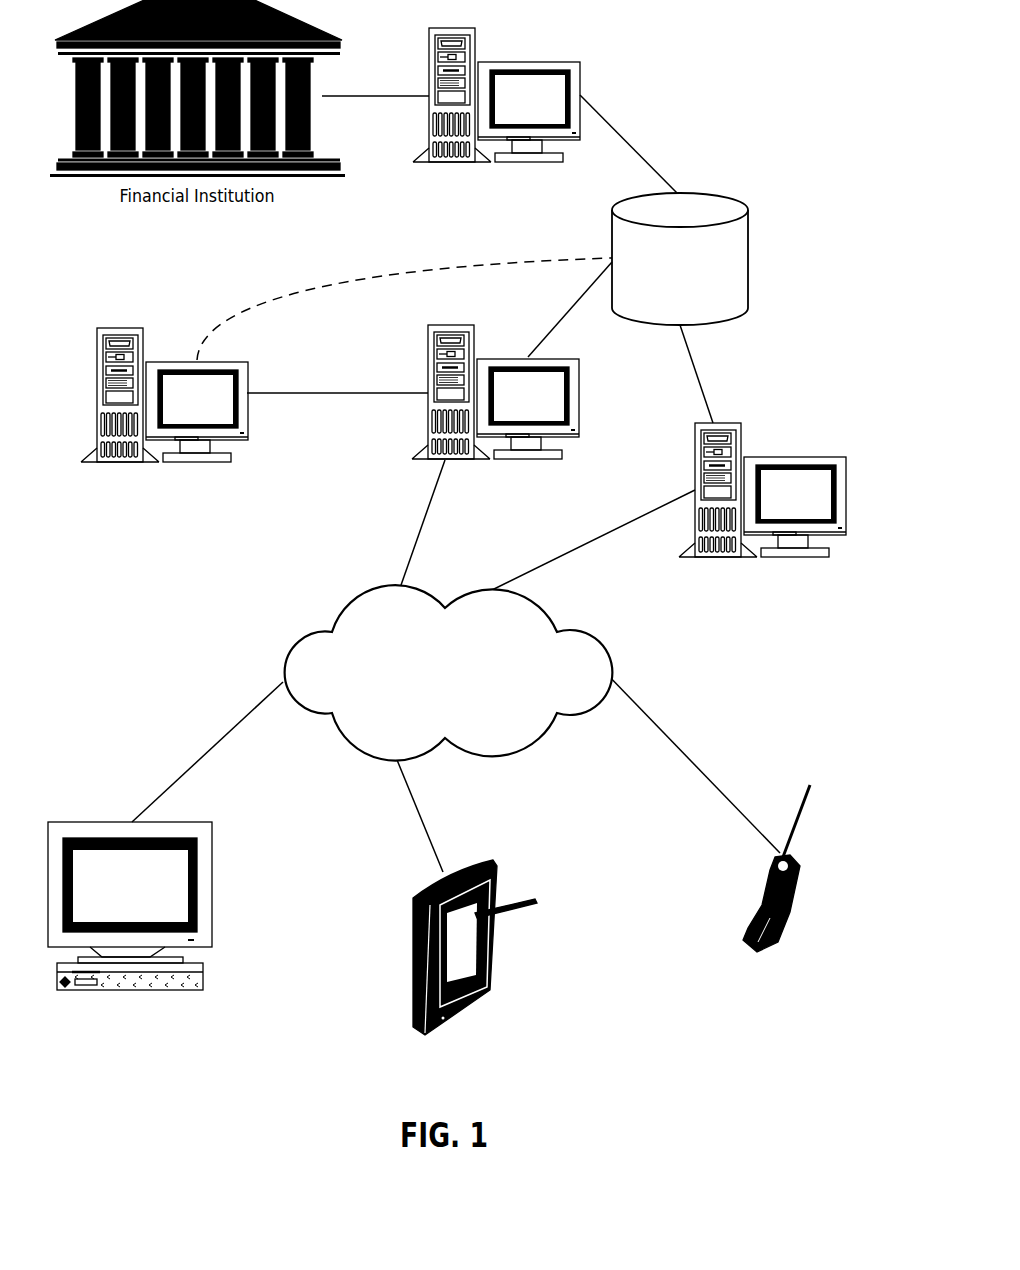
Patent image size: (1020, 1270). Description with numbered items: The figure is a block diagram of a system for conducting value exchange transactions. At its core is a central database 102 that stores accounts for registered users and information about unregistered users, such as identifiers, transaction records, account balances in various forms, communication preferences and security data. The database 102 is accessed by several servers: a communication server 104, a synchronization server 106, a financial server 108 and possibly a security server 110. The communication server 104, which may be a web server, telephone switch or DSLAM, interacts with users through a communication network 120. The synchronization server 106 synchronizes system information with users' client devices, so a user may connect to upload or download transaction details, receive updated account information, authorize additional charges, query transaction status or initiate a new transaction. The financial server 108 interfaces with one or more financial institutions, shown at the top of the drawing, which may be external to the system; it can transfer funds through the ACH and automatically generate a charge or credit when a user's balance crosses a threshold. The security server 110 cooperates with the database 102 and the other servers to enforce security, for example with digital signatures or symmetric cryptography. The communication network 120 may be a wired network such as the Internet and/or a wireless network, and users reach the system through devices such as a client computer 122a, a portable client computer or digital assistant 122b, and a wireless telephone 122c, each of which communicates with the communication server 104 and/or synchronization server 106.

The central database 102 is at (680, 259).
The communication server 104 is at (762, 513).
The synchronization server 106 is at (495, 416).
The financial server 108 is at (496, 119).
The security server 110 is at (164, 419).
The communication network 120 is at (449, 672).
The client computer 122a is at (130, 919).
The portable client computer or digital assistant 122b is at (475, 961).
The wireless telephone 122c is at (776, 880).